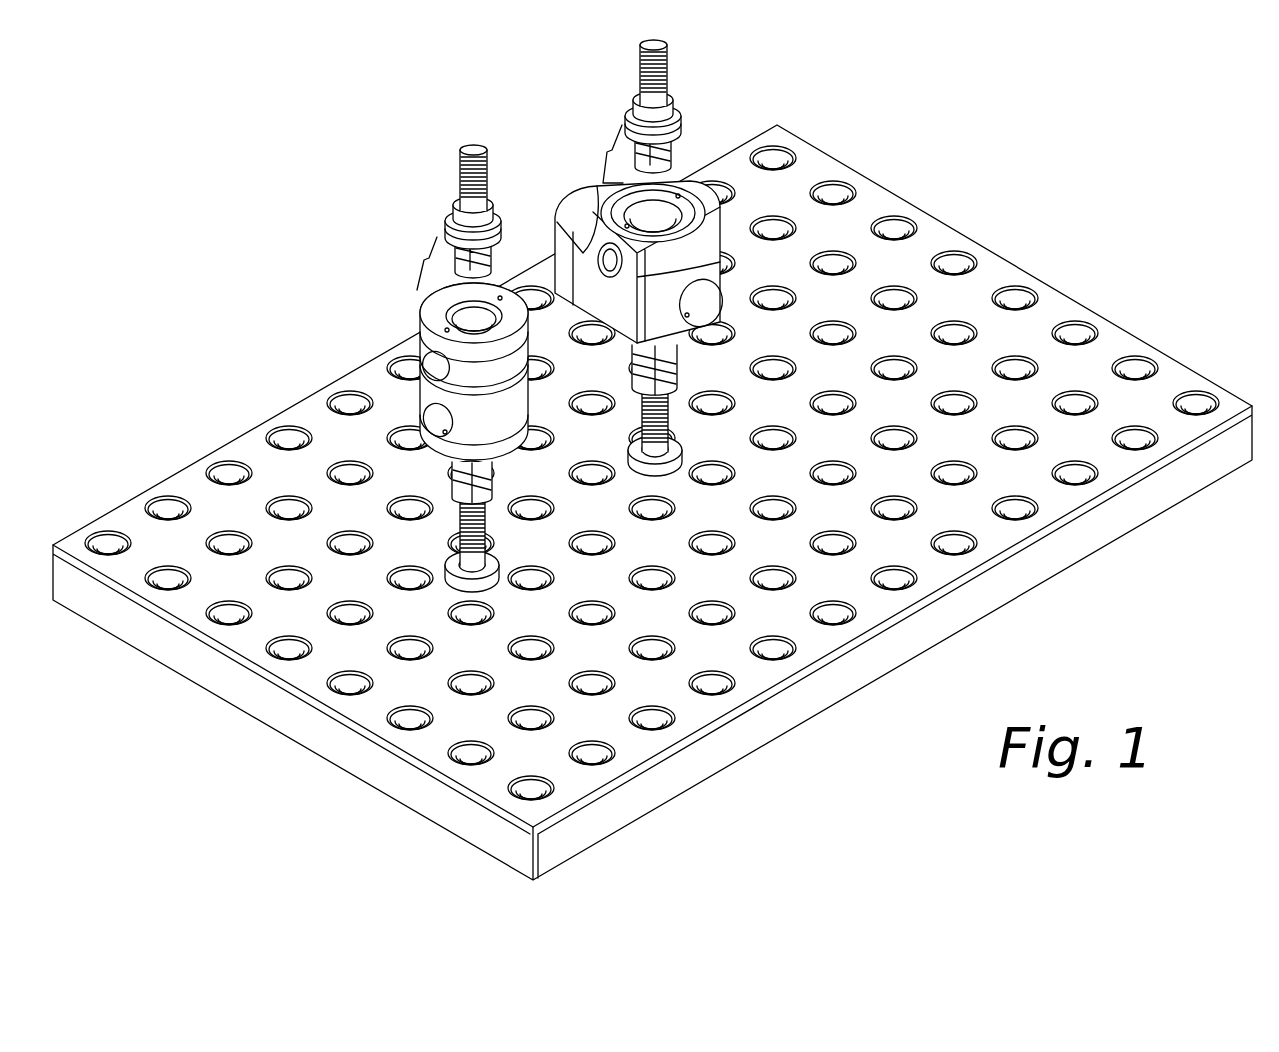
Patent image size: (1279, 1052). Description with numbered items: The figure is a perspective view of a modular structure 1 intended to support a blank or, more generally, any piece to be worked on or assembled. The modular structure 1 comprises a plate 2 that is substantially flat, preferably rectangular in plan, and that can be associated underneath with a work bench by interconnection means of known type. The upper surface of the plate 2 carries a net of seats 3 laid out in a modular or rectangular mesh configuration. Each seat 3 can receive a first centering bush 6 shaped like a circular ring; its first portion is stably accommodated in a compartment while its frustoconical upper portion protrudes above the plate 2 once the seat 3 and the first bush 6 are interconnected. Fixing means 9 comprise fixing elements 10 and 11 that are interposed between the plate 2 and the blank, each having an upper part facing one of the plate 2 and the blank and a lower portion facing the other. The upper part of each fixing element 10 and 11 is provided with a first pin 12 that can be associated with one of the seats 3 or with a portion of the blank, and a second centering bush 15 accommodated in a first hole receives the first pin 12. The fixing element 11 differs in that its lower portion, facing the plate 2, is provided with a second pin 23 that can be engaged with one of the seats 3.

The modular structure 1 is at (213, 240).
The plate 2 is at (177, 470).
The seats 3 is at (852, 188).
The first centering bush 6 is at (688, 453).
The fixing means 9 is at (403, 160).
The fixing element 10 is at (420, 349).
The fixing element 11 is at (583, 189).
The first pin 12 is at (460, 140).
The second centering bush 15 is at (447, 213).
The second pin 23 is at (670, 401).